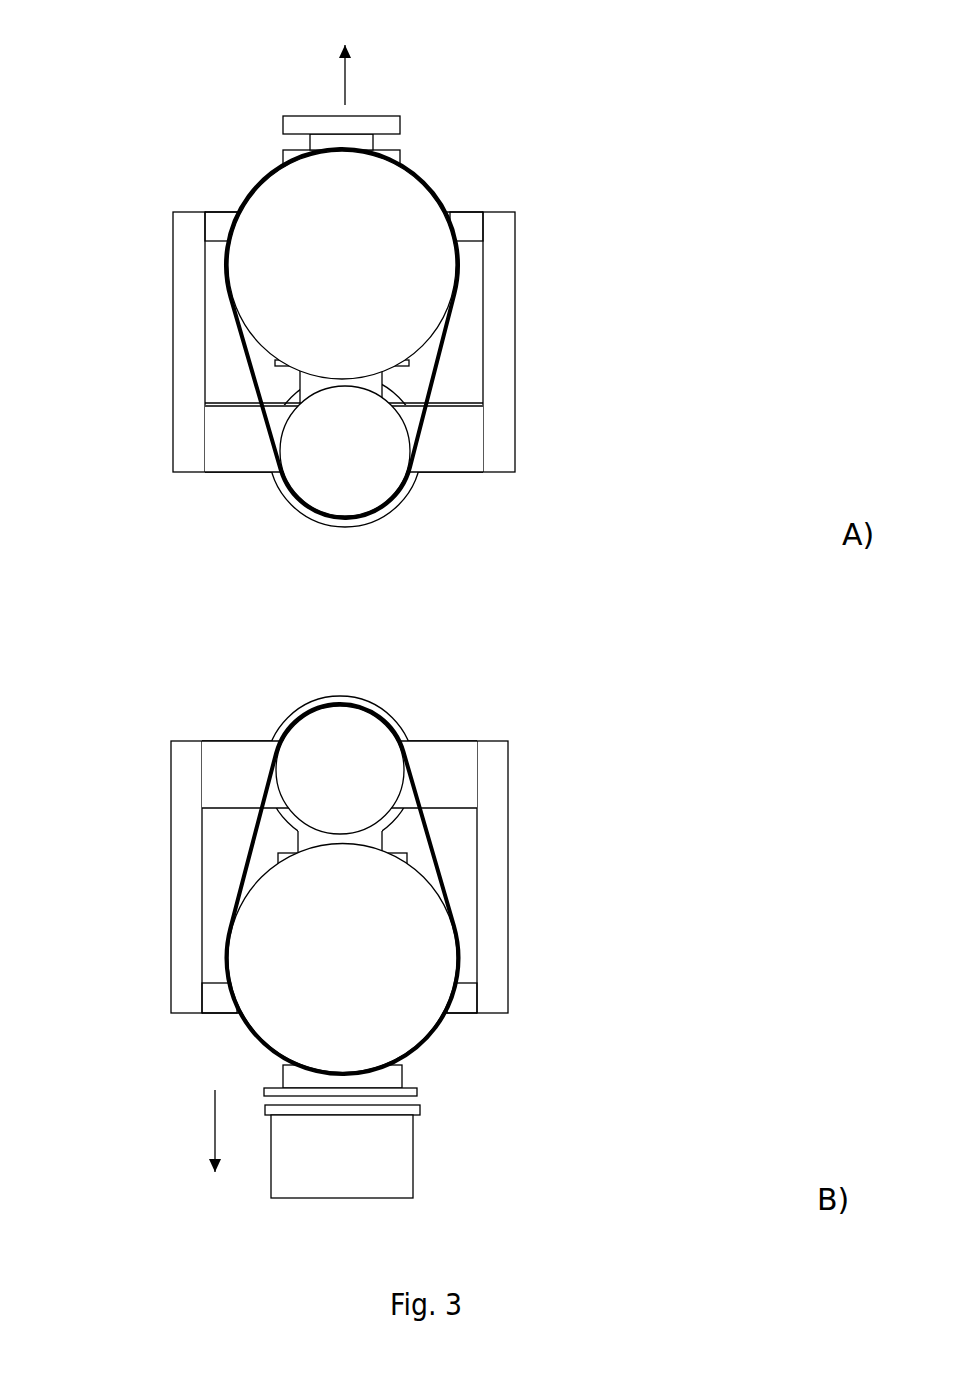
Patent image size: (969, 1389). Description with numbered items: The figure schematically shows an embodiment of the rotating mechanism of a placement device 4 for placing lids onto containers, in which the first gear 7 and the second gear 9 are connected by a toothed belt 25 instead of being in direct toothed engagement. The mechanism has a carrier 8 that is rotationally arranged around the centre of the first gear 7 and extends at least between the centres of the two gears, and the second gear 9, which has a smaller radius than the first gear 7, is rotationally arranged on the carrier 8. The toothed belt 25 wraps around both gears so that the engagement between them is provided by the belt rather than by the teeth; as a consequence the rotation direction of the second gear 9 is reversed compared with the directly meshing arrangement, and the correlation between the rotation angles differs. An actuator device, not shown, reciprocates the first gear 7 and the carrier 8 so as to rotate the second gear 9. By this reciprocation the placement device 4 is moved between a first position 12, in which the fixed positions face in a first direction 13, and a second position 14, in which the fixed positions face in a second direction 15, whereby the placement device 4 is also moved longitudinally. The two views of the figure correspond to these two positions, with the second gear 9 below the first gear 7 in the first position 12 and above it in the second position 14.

The placement device 4 is at (428, 145).
The first gear 7 is at (410, 225).
The carrier 8 is at (378, 376).
The second gear 9 is at (322, 470).
The first position 12 is at (570, 313).
The first direction 13 is at (345, 52).
The second position 14 is at (463, 1057).
The second direction 15 is at (213, 1158).
The toothed belt 25 is at (245, 362).